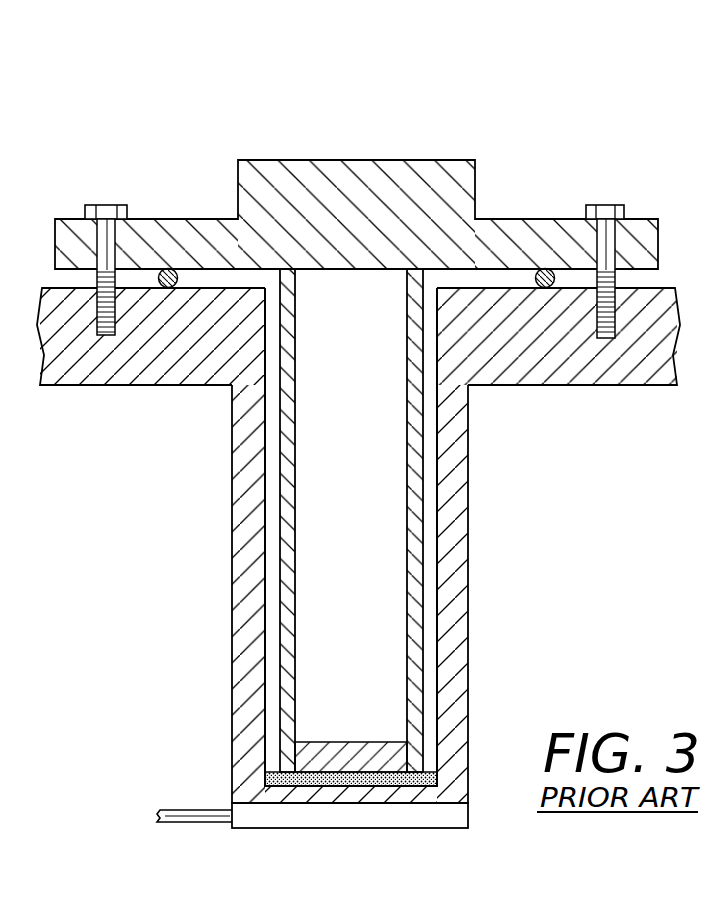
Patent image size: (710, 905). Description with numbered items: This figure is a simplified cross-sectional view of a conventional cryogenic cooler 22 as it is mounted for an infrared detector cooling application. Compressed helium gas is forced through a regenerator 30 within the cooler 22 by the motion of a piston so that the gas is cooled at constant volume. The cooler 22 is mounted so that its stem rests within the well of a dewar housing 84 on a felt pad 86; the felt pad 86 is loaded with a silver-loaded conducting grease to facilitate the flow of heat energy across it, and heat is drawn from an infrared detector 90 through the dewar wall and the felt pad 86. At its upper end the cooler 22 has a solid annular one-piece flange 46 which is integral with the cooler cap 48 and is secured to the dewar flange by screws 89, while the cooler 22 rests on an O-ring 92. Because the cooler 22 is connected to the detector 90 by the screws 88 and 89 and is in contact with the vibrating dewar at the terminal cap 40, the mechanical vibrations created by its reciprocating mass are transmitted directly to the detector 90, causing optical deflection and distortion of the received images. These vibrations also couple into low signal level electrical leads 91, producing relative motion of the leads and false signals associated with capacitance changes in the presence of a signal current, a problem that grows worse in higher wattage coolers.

The cooler 22 is at (203, 98).
The regenerator 30 is at (421, 524).
The terminal cap 40 is at (325, 753).
The flange 46 is at (650, 219).
The cooler cap 48 is at (398, 170).
The dewar housing 84 is at (460, 608).
The felt pad 86 is at (278, 780).
The screws 88 is at (102, 205).
The screws 89 is at (602, 205).
The infrared detector 90 is at (288, 822).
The electrical leads 91 is at (183, 808).
The O-ring 92 is at (541, 268).